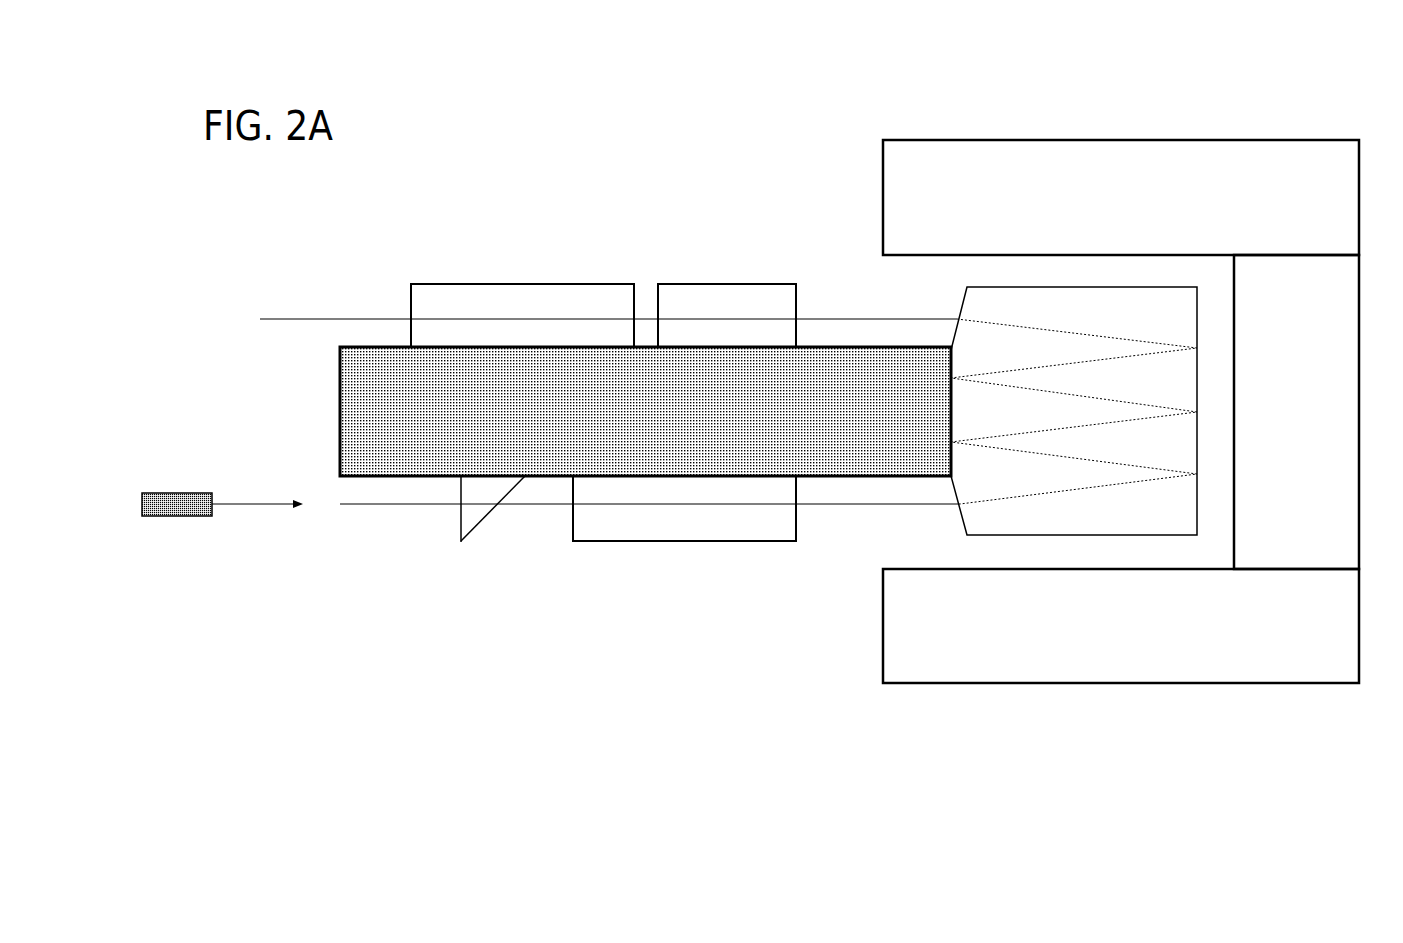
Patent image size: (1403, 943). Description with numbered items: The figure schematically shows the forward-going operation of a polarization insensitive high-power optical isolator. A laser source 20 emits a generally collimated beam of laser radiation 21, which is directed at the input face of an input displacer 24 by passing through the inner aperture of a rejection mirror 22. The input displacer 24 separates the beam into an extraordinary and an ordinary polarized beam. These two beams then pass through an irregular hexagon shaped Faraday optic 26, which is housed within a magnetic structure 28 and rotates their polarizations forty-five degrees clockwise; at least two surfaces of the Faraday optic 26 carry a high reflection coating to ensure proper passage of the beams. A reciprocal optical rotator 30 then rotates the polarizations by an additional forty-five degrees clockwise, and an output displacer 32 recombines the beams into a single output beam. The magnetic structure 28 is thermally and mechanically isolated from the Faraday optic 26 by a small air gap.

The laser source 20 is at (193, 517).
The beam of laser radiation 21 is at (377, 506).
The rejection mirror 22 is at (468, 532).
The input displacer 24 is at (729, 541).
The irregular hexagon shaped Faraday optic 26 is at (1097, 535).
The magnetic structure 28 is at (1107, 139).
The reciprocal optical rotator 30 is at (703, 284).
The output displacer 32 is at (516, 284).